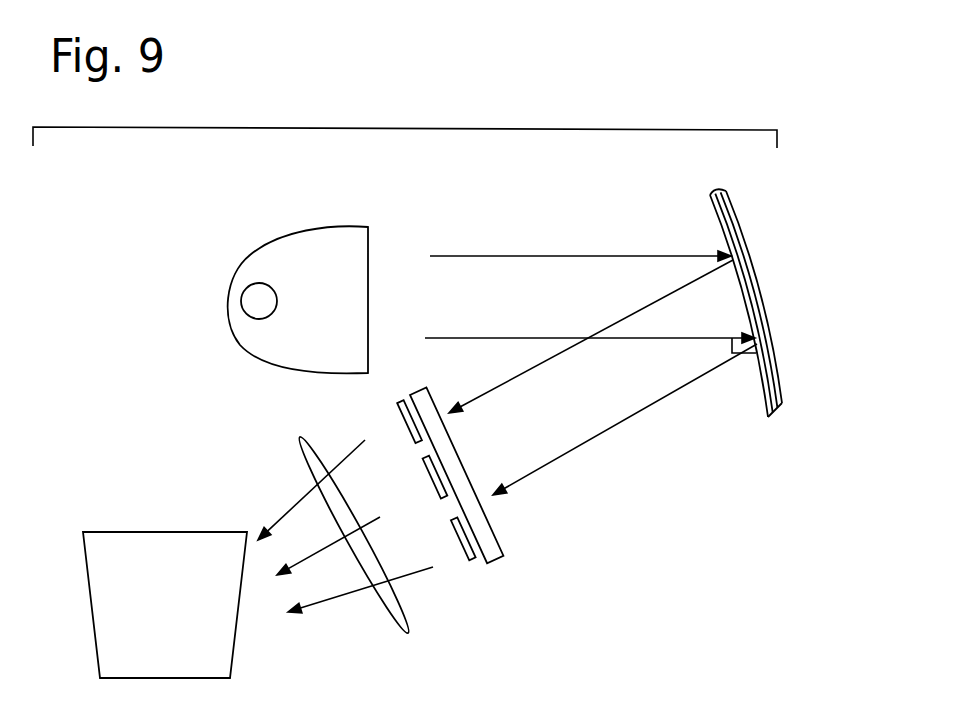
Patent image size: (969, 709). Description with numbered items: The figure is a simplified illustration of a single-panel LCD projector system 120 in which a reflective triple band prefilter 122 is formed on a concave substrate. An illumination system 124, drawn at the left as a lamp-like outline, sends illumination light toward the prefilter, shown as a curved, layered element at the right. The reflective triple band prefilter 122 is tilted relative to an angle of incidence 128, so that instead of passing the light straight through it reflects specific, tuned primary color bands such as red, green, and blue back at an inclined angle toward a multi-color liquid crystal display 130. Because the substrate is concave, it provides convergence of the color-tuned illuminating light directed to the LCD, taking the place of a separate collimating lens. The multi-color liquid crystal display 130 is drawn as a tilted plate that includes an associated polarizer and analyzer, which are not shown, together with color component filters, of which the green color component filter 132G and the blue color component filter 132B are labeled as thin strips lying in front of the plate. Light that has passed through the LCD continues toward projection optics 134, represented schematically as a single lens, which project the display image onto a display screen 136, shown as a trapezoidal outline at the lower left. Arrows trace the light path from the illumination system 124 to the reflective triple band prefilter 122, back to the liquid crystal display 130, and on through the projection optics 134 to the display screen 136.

The single-panel LCD projector system 120 is at (458, 129).
The reflective triple band prefilter 122 is at (783, 428).
The illumination system 124 is at (289, 381).
The angle of incidence 128 is at (754, 367).
The multi-color liquid crystal display 130 is at (499, 588).
The green color component filter 132G is at (397, 404).
The blue color component filter 132B is at (476, 571).
The projection optics 134 is at (298, 438).
The display screen 136 is at (122, 537).